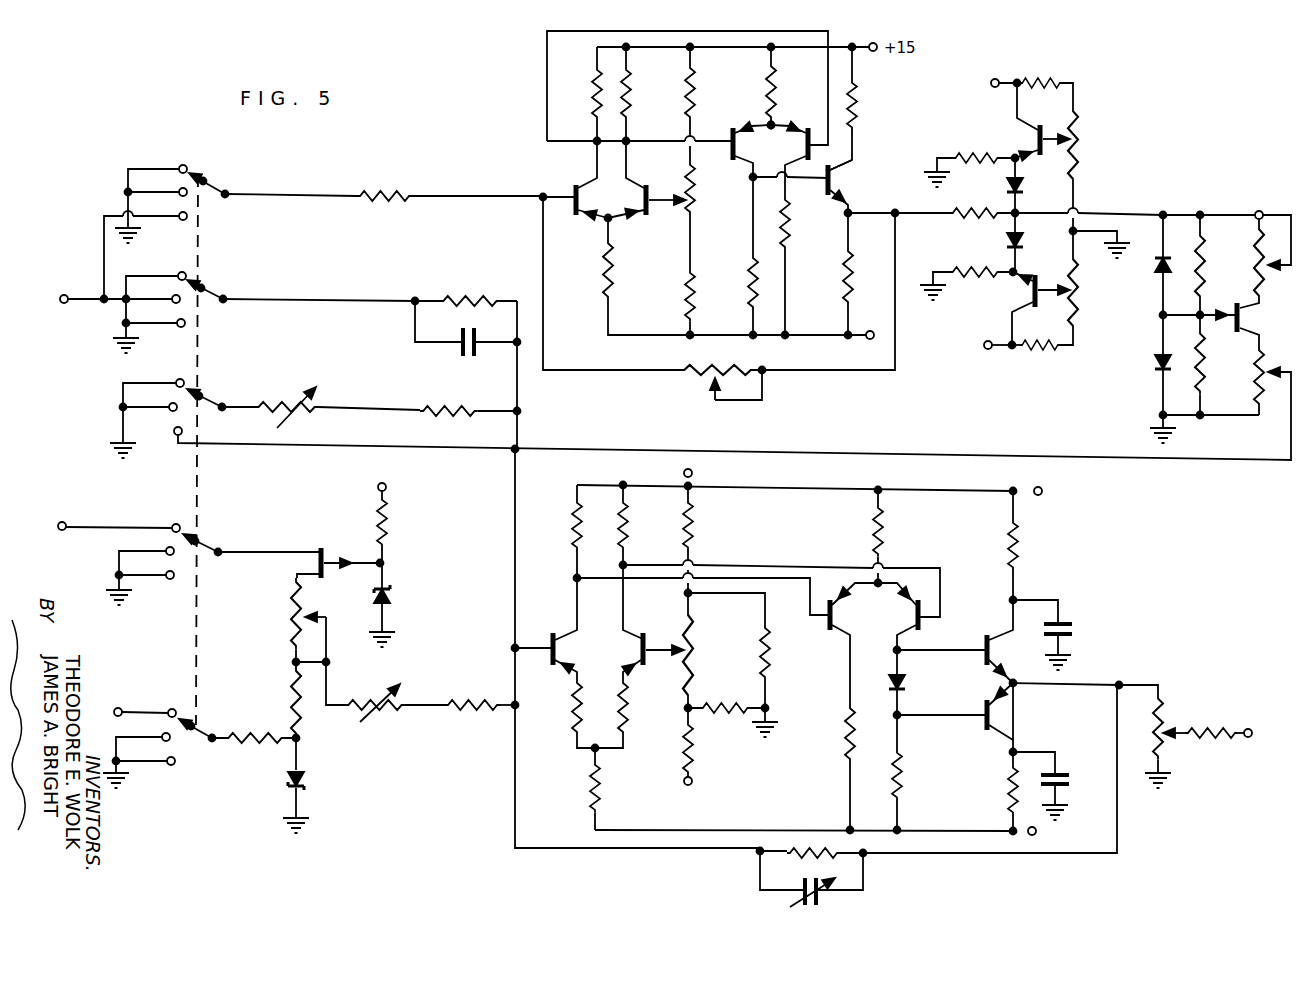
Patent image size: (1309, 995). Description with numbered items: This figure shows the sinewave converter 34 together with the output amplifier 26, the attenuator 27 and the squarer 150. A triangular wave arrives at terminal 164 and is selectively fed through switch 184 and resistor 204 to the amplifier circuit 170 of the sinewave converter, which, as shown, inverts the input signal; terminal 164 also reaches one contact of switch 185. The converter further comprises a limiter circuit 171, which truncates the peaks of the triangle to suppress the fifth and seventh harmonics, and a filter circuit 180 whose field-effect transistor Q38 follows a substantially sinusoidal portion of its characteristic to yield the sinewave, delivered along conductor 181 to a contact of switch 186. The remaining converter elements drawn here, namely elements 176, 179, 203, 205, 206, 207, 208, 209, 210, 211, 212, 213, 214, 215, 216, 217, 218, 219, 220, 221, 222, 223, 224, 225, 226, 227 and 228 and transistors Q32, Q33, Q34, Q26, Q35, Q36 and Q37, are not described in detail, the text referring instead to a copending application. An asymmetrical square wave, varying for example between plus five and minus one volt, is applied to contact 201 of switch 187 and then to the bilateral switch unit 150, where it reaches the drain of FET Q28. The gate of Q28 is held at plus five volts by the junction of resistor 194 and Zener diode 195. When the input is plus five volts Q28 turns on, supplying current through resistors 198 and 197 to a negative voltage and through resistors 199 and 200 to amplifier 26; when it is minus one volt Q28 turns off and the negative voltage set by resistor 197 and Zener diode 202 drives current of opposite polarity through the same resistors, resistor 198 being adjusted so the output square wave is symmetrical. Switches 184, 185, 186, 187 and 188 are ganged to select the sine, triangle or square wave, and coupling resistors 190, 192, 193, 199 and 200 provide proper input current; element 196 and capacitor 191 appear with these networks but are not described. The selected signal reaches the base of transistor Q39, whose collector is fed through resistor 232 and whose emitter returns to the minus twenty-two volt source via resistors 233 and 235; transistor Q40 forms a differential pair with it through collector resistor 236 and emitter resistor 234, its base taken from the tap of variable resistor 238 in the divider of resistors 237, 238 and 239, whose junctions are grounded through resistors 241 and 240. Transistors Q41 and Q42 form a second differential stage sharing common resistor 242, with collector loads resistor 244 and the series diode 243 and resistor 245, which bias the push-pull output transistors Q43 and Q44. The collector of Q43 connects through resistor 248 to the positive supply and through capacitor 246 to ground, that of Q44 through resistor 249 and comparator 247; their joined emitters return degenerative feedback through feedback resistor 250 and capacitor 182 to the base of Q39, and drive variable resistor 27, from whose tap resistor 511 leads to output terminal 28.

The terminal 164 is at (63, 296).
The contact 201 is at (63, 521).
The switch 184 is at (215, 179).
The switch 185 is at (214, 290).
The switch 186 is at (207, 400).
The switch 187 is at (208, 543).
The switch 188 is at (207, 727).
The coupling resistor 190 is at (471, 298).
The capacitor 191 is at (467, 358).
The coupling resistor 192 is at (290, 398).
The coupling resistor 193 is at (450, 405).
The resistor 194 is at (390, 521).
The Zener diode 195 is at (392, 600).
The resistor 196 is at (264, 746).
The resistor 197 is at (291, 699).
The resistor 198 is at (290, 612).
The coupling resistor 199 is at (473, 700).
The coupling resistor 200 is at (376, 696).
The Zener diode 202 is at (306, 782).
The resistor 204 is at (390, 186).
The resistor 205 is at (607, 281).
The resistor 206 is at (631, 97).
The resistor 207 is at (700, 95).
The potentiometer 208 is at (696, 203).
The resistor 209 is at (686, 298).
The resistor 210 is at (778, 95).
The resistor 211 is at (748, 281).
The resistor 212 is at (858, 110).
The resistor 213 is at (842, 282).
The potentiometer 214 is at (735, 366).
The resistor 215 is at (1042, 78).
The resistor 216 is at (978, 149).
The resistor 217 is at (981, 209).
The resistor 218 is at (978, 263).
The diode 219 is at (1022, 190).
The diode 220 is at (1022, 242).
The resistor 221 is at (1041, 355).
The potentiometer 222 is at (1080, 143).
The diode 223 is at (1155, 265).
The diode 224 is at (1152, 362).
The resistor 225 is at (1205, 276).
The resistor 226 is at (1204, 352).
The potentiometer 227 is at (1255, 252).
The potentiometer 228 is at (1253, 380).
The resistor 232 is at (570, 521).
The resistor 233 is at (570, 710).
The resistor 234 is at (627, 706).
The resistor 235 is at (590, 787).
The resistor 236 is at (628, 521).
The resistor 237 is at (696, 521).
The variable resistor 238 is at (695, 646).
The resistor 239 is at (695, 752).
The resistor 240 is at (735, 686).
The resistor 241 is at (774, 655).
The common resistor 242 is at (883, 530).
The diode 243 is at (907, 685).
The resistor 244 is at (843, 735).
The resistor 245 is at (903, 770).
The capacitor 246 is at (1075, 627).
The comparator 247 is at (1066, 760).
The resistor 248 is at (1020, 549).
The resistor 249 is at (1005, 791).
The feedback resistor 250 is at (810, 845).
The capacitor 182 is at (818, 905).
The resistor 176 is at (596, 96).
The potentiometer 179 is at (1078, 290).
The resistor 203 is at (790, 232).
The amplifier circuit 170 is at (526, 159).
The limiter circuit 171 is at (950, 325).
The filter circuit 180 is at (1230, 200).
The conductor 181 is at (1193, 462).
The bilateral switch unit 150 is at (263, 594).
The sinewave converter 34 is at (1180, 167).
The output amplifier 26 is at (1178, 640).
The variable resistor 27 is at (1165, 730).
The resistor 511 is at (1211, 738).
The output terminal 28 is at (1248, 738).
The field-effect transistor Q28 is at (301, 563).
The transistor Q32 is at (575, 190).
The transistor Q33 is at (642, 191).
The transistor Q34 is at (745, 140).
The transistor Q26 is at (795, 148).
The transistor Q35 is at (857, 188).
The transistor Q36 is at (1014, 122).
The transistor Q37 is at (1008, 309).
The field-effect transistor Q38 is at (1232, 325).
The transistor Q39 is at (545, 646).
The transistor Q40 is at (653, 646).
The transistor Q41 is at (846, 640).
The transistor Q42 is at (909, 614).
The transistor Q43 is at (1016, 687).
The transistor Q44 is at (1016, 719).